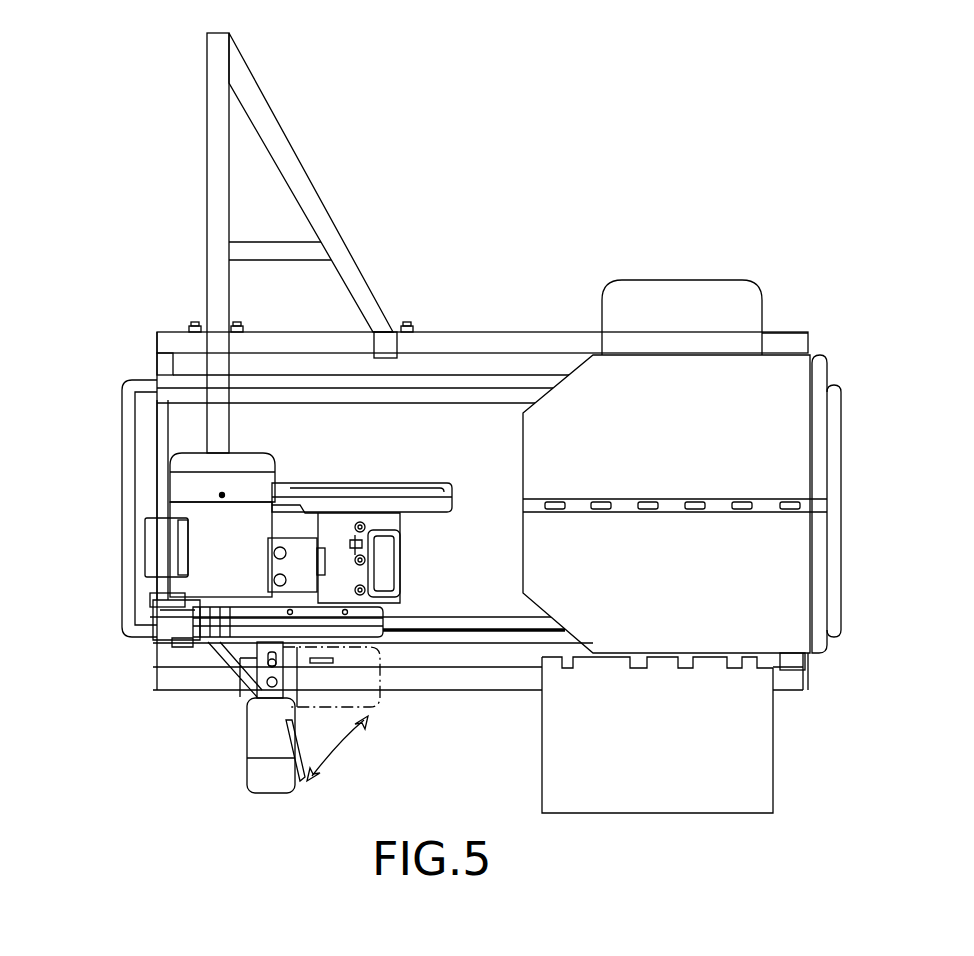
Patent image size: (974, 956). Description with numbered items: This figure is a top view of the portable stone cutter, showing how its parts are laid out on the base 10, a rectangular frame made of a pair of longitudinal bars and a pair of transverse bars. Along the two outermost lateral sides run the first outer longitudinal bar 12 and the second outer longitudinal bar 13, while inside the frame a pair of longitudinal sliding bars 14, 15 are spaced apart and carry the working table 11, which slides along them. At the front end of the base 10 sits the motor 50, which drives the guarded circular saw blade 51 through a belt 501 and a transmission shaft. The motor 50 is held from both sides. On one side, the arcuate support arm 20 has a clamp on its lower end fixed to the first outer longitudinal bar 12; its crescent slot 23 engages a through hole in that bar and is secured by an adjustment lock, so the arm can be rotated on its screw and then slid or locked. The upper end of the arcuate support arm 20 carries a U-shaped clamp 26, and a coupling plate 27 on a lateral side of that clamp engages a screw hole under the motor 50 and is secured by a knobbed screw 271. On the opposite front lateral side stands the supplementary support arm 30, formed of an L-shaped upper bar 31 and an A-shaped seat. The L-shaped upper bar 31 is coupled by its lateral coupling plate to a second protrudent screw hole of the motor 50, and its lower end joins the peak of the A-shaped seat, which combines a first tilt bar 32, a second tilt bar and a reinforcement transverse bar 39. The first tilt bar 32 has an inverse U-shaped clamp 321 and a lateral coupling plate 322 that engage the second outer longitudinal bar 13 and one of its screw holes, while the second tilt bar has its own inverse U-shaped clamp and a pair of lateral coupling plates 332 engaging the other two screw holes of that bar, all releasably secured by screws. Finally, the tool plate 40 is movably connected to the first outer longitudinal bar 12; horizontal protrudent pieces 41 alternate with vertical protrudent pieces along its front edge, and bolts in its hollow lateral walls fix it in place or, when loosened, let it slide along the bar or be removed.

The base 10 is at (853, 517).
The working table 11 is at (595, 405).
The first outer longitudinal bar 12 is at (492, 680).
The second outer longitudinal bar 13 is at (493, 345).
The longitudinal sliding bar 14 is at (455, 622).
The longitudinal sliding bar 15 is at (454, 405).
The arcuate support arm 20 is at (268, 792).
The crescent slot 23 is at (297, 690).
The U-shaped clamp 26 is at (256, 697).
The coupling plate 27 is at (214, 648).
The knobbed screw 271 is at (175, 648).
The supplementary support arm 30 is at (291, 153).
The L-shaped upper bar 31 is at (213, 134).
The first tilt bar 32 is at (265, 243).
The inverse U-shaped clamp 321 is at (386, 332).
The lateral coupling plate 322 is at (409, 326).
The lateral coupling plates 332 is at (241, 326).
The reinforcement transverse bar 39 is at (283, 248).
The tool plate 40 is at (686, 755).
The horizontal protrudent pieces 41 is at (677, 662).
The motor 50 is at (187, 505).
The belt 501 is at (358, 630).
The guarded circular saw blade 51 is at (382, 483).